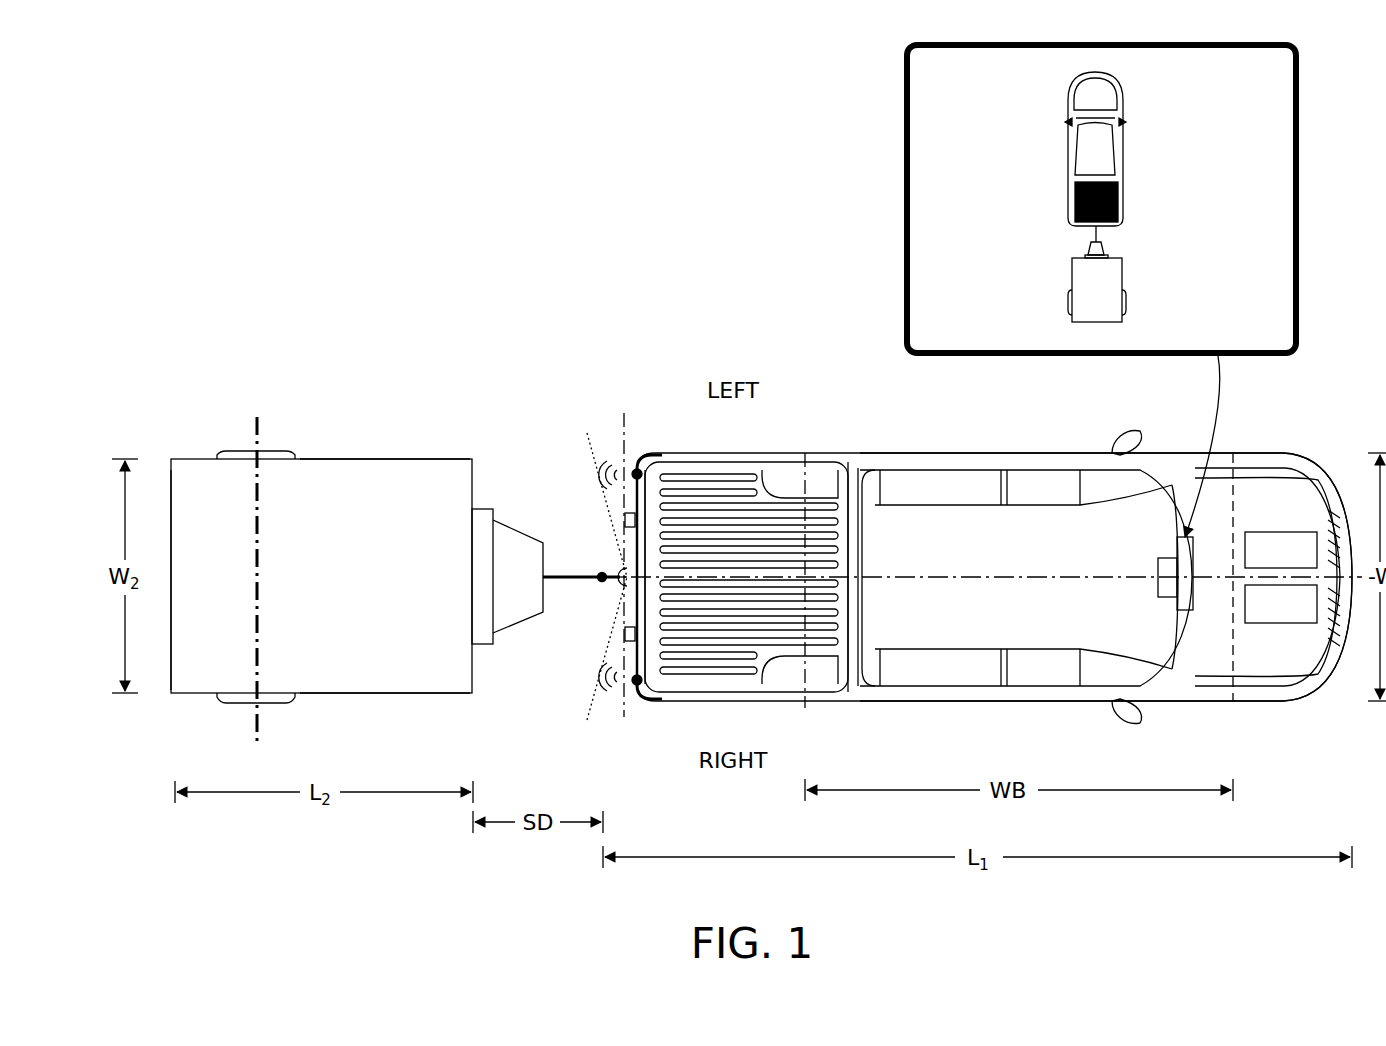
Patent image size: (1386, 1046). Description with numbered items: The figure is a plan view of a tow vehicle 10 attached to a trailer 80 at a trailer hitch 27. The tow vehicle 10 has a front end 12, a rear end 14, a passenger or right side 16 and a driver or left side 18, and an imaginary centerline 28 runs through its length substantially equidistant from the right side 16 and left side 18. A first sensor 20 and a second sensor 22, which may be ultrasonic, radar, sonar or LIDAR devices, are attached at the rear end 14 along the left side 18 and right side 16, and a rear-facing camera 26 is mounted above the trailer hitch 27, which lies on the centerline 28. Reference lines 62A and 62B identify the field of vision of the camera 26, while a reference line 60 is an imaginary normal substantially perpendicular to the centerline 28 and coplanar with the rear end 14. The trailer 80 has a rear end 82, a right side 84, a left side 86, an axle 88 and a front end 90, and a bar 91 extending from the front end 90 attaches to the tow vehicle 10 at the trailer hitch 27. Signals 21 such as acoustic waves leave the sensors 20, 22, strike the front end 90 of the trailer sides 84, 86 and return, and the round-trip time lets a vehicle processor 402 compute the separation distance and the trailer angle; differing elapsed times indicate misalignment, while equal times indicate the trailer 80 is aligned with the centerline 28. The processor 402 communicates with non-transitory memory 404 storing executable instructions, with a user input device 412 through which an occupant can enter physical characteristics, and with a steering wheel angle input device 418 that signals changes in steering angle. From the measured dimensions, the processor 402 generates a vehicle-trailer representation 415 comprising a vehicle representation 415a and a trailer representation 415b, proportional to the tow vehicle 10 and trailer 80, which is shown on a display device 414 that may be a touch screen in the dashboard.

The tow vehicle 10 is at (994, 577).
The front end 12 is at (1346, 498).
The rear end 14 is at (633, 656).
The right side 16 is at (1068, 704).
The left side 18 is at (1082, 450).
The first sensor 20 is at (645, 462).
The signals 21 is at (615, 465).
The second sensor 22 is at (640, 690).
The rear-facing camera 26 is at (620, 587).
The trailer hitch 27 is at (598, 572).
The centerline 28 is at (1040, 576).
The reference line 60 is at (635, 470).
The reference line 62A is at (590, 703).
The reference line 62B is at (600, 470).
The trailer 80 is at (321, 576).
The rear end 82 is at (169, 662).
The right side 84 is at (382, 697).
The left side 86 is at (395, 456).
The axle 88 is at (257, 418).
The front end 90 is at (475, 486).
The bar 91 is at (560, 581).
The vehicle processor 402 is at (1281, 550).
The non-transitory memory 404 is at (1281, 604).
The user input device 412 is at (1187, 603).
The display device 414 is at (1299, 143).
The vehicle-trailer representation 415 is at (1166, 197).
The vehicle representation 415a is at (1124, 140).
The trailer representation 415b is at (1137, 274).
The steering wheel angle input device 418 is at (1160, 580).